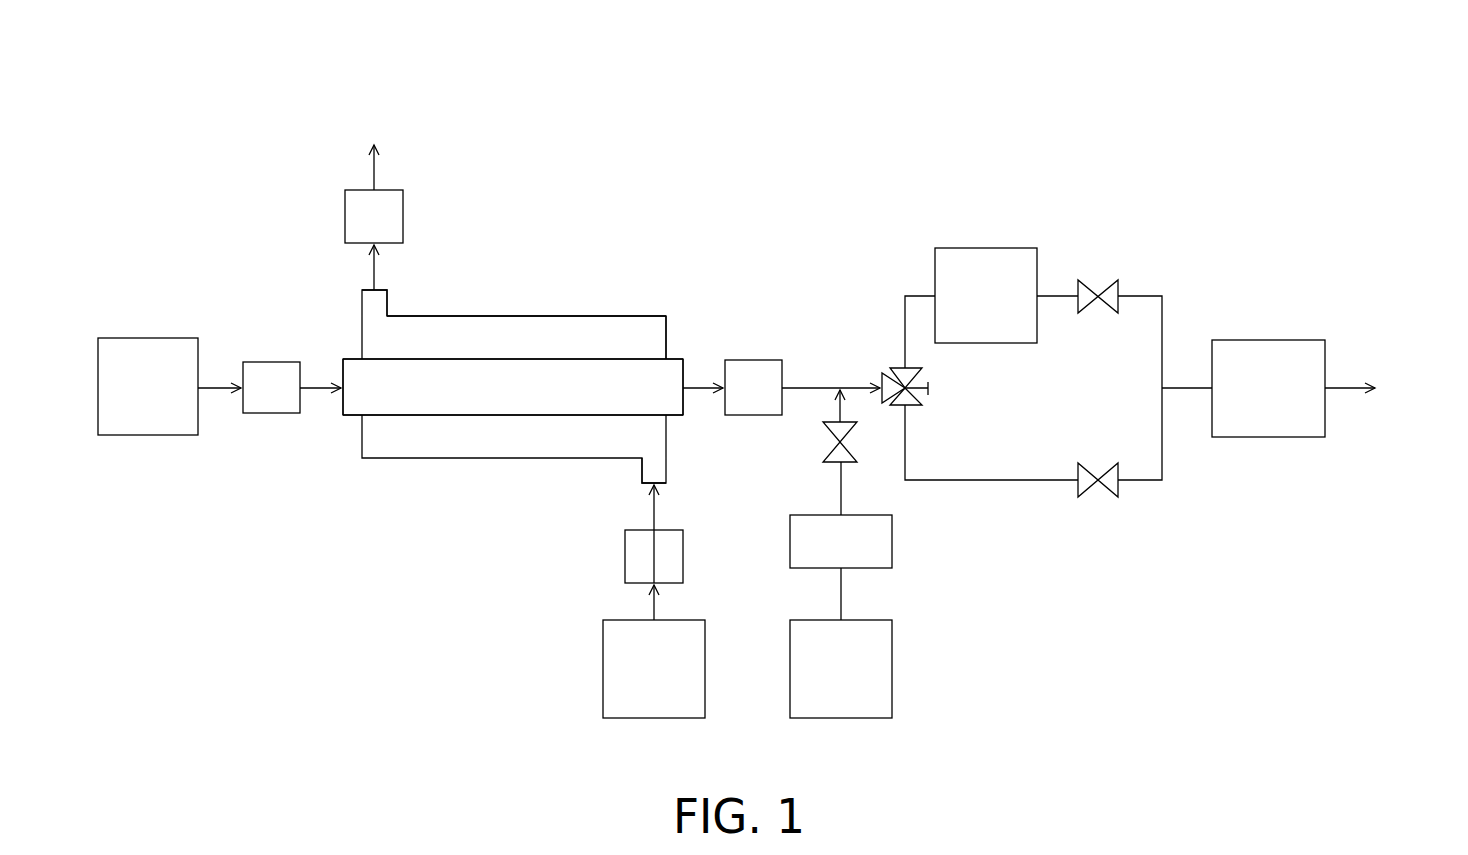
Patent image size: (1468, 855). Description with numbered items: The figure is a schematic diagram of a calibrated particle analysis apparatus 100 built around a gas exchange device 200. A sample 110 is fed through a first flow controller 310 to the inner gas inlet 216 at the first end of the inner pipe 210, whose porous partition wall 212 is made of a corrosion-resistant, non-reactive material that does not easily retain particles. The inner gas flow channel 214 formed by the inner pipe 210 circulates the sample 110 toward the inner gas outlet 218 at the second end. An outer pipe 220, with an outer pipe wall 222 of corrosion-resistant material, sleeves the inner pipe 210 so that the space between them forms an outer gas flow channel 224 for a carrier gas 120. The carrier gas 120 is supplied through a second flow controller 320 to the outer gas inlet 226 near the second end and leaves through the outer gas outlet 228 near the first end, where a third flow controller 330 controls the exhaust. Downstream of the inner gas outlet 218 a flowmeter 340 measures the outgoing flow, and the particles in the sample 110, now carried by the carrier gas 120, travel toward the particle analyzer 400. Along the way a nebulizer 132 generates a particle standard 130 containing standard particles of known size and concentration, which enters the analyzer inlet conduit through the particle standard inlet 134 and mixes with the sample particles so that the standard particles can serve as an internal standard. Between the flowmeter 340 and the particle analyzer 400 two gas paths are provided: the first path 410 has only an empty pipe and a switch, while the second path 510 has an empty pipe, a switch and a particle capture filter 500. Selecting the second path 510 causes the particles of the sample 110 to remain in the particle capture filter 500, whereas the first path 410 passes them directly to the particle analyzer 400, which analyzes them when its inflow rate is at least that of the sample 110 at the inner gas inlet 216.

The calibrated particle analysis apparatus 100 is at (1346, 732).
The sample 110 is at (150, 435).
The carrier gas source 120 is at (705, 670).
The particle standard 130 is at (892, 673).
The nebulizer 132 is at (892, 542).
The particle standard inlet 134 is at (842, 382).
The gas exchange device 200 is at (538, 196).
The inner pipe 210 is at (559, 419).
The tube wall 212 is at (483, 417).
The inner gas flow channel 214 is at (434, 399).
The inner gas inlet 216 is at (332, 419).
The tube outlet 218 is at (685, 348).
The outer pipe 220 is at (426, 314).
The jacket wall 222 is at (482, 316).
The jacket cavity 224 is at (551, 331).
The jacket inlet 226 is at (677, 483).
The jacket outlet 228 is at (351, 292).
The first flow controller 310 is at (272, 413).
The second flow controller 320 is at (683, 557).
The third flow controller 330 is at (345, 217).
The flowmeter 340 is at (754, 360).
The particle analyzer 400 is at (1283, 293).
The first path 410 is at (1024, 499).
The particle capture filter 500 is at (987, 248).
The second path 510 is at (1053, 278).